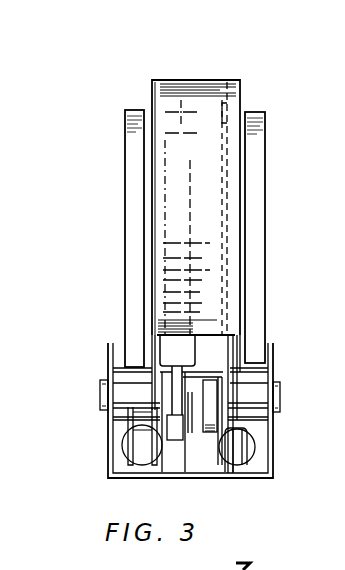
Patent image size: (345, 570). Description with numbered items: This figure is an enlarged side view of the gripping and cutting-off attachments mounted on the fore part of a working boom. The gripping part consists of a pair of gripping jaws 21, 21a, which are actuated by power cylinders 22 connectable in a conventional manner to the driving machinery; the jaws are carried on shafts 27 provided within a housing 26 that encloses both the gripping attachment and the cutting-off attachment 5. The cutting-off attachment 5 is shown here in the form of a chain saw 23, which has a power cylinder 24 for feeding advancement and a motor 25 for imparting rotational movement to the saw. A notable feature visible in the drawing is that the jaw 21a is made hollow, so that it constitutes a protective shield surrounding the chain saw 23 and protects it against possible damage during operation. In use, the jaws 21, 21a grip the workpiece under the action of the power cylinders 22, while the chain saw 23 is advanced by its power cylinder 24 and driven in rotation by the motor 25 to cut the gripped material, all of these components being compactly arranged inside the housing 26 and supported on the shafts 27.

The cutting-off attachment 5 is at (258, 80).
The gripping jaw 21 is at (127, 127).
The gripping jaw 21a is at (160, 107).
The power cylinder 22 is at (138, 447).
The chain saw 23 is at (223, 122).
The power cylinder 24 is at (183, 100).
The motor 25 is at (203, 435).
The housing 26 is at (268, 465).
The shaft 27 is at (102, 388).